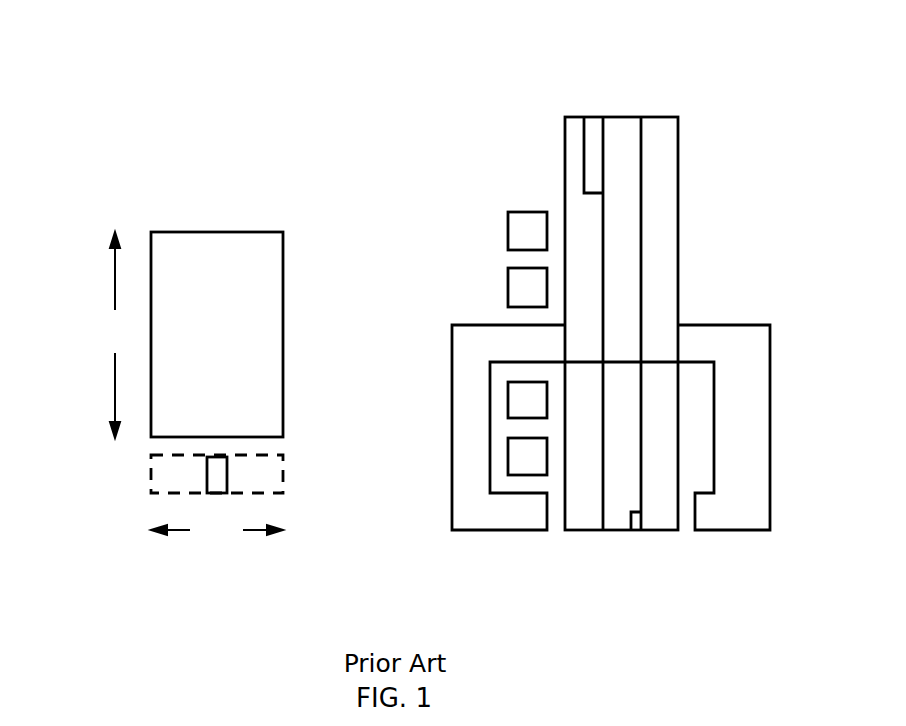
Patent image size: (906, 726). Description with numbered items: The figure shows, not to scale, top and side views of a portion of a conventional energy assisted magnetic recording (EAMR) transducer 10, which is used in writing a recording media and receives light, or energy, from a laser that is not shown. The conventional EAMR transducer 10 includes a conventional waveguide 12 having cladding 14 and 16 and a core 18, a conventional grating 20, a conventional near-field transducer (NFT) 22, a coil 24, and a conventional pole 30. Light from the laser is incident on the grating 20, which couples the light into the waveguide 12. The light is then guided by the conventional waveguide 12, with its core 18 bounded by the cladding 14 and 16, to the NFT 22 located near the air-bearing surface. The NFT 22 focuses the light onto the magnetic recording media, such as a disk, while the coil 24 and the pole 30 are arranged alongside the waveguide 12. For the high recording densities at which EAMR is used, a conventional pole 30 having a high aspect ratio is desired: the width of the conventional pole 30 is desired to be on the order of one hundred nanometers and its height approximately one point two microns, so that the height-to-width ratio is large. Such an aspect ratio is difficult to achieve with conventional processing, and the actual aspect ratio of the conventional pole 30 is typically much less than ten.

The energy assisted magnetic recording (EAMR) transducer 10 is at (380, 38).
The waveguide 12 is at (614, 290).
The cladding 14 is at (640, 290).
The cladding 16 is at (565, 138).
The core 18 is at (642, 175).
The grating 20 is at (586, 117).
The near-field transducer (NFT) 22 is at (79, 487).
The coil 24 is at (521, 179).
The pole 30 is at (283, 302).